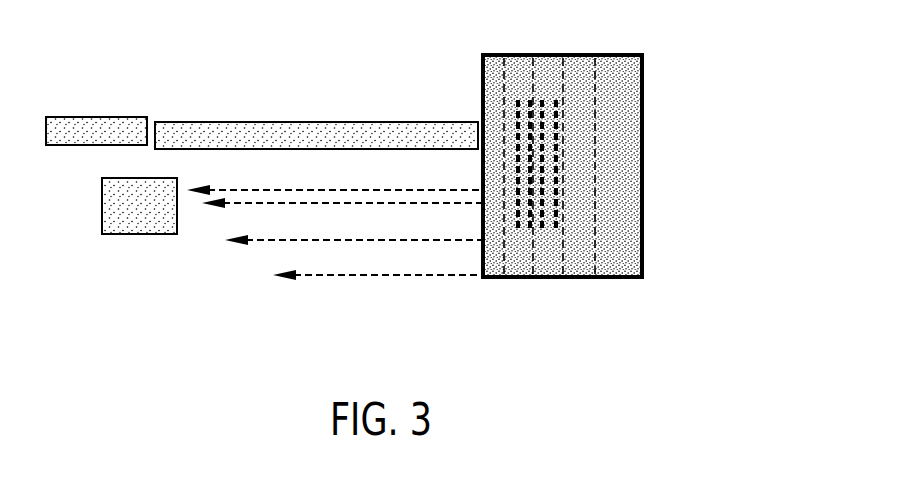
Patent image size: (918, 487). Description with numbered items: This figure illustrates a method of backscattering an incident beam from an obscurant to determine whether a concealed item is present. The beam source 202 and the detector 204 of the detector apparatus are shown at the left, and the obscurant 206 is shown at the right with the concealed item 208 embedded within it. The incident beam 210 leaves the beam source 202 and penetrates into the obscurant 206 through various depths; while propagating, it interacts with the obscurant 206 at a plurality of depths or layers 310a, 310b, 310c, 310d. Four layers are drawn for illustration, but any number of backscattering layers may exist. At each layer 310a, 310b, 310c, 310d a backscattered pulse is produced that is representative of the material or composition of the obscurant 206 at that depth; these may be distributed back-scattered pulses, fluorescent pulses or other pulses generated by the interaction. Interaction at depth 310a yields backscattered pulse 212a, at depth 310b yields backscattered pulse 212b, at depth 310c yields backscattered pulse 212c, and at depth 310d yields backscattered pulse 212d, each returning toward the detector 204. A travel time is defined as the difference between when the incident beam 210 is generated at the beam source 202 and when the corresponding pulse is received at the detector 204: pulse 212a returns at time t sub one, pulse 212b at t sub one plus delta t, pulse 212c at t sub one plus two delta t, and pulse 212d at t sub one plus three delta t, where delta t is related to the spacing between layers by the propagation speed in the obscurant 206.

The beam source 202 is at (120, 117).
The detector 204 is at (143, 234).
The obscurant 206 is at (642, 228).
The concealed item 208 is at (597, 140).
The incident beam 210 is at (190, 122).
The backscattered pulse 212a is at (387, 188).
The backscattered pulse 212b is at (432, 202).
The backscattered pulse 212c is at (250, 244).
The backscattered pulse 212d is at (467, 277).
The depth or layer 310a is at (514, 108).
The depth or layer 310b is at (517, 96).
The depth or layer 310c is at (544, 97).
The depth or layer 310d is at (558, 104).